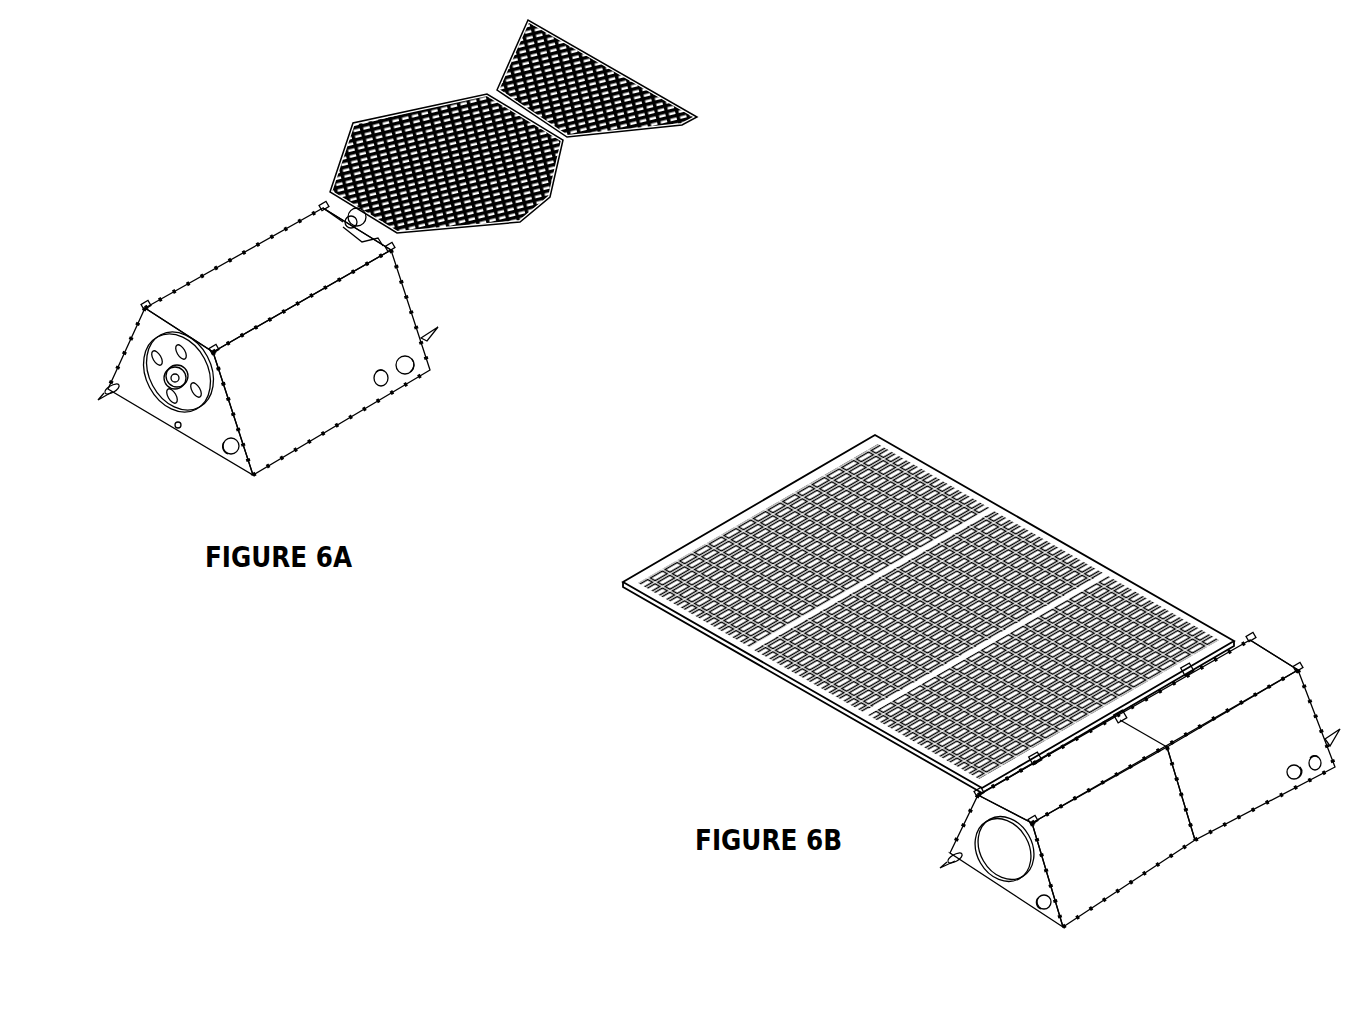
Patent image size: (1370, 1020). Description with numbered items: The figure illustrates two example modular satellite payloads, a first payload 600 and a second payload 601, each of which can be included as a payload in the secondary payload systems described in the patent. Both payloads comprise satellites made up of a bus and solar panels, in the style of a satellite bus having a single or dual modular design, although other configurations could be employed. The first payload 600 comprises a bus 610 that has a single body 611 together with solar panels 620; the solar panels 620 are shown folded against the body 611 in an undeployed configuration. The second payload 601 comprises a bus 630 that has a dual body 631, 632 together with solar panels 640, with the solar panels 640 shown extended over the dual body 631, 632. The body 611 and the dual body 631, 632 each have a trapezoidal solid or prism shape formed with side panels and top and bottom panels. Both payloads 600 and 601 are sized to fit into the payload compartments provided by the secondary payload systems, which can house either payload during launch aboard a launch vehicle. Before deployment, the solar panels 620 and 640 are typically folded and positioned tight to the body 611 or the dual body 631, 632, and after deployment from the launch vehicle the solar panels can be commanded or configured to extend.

In FIG. 6A, the payload 600 is at (196, 128).
In FIG. 6A, the bus 610 is at (176, 280).
In FIG. 6A, the body 611 is at (364, 429).
In FIG. 6A, the solar panels 620 is at (336, 139).
In FIG. 6B, the payload 601 is at (736, 450).
In FIG. 6B, the bus 630 is at (952, 826).
In FIG. 6B, the dual-body 631 is at (1162, 887).
In FIG. 6B, the dual-body 632 is at (1260, 830).
In FIG. 6B, the solar panels 640 is at (644, 553).